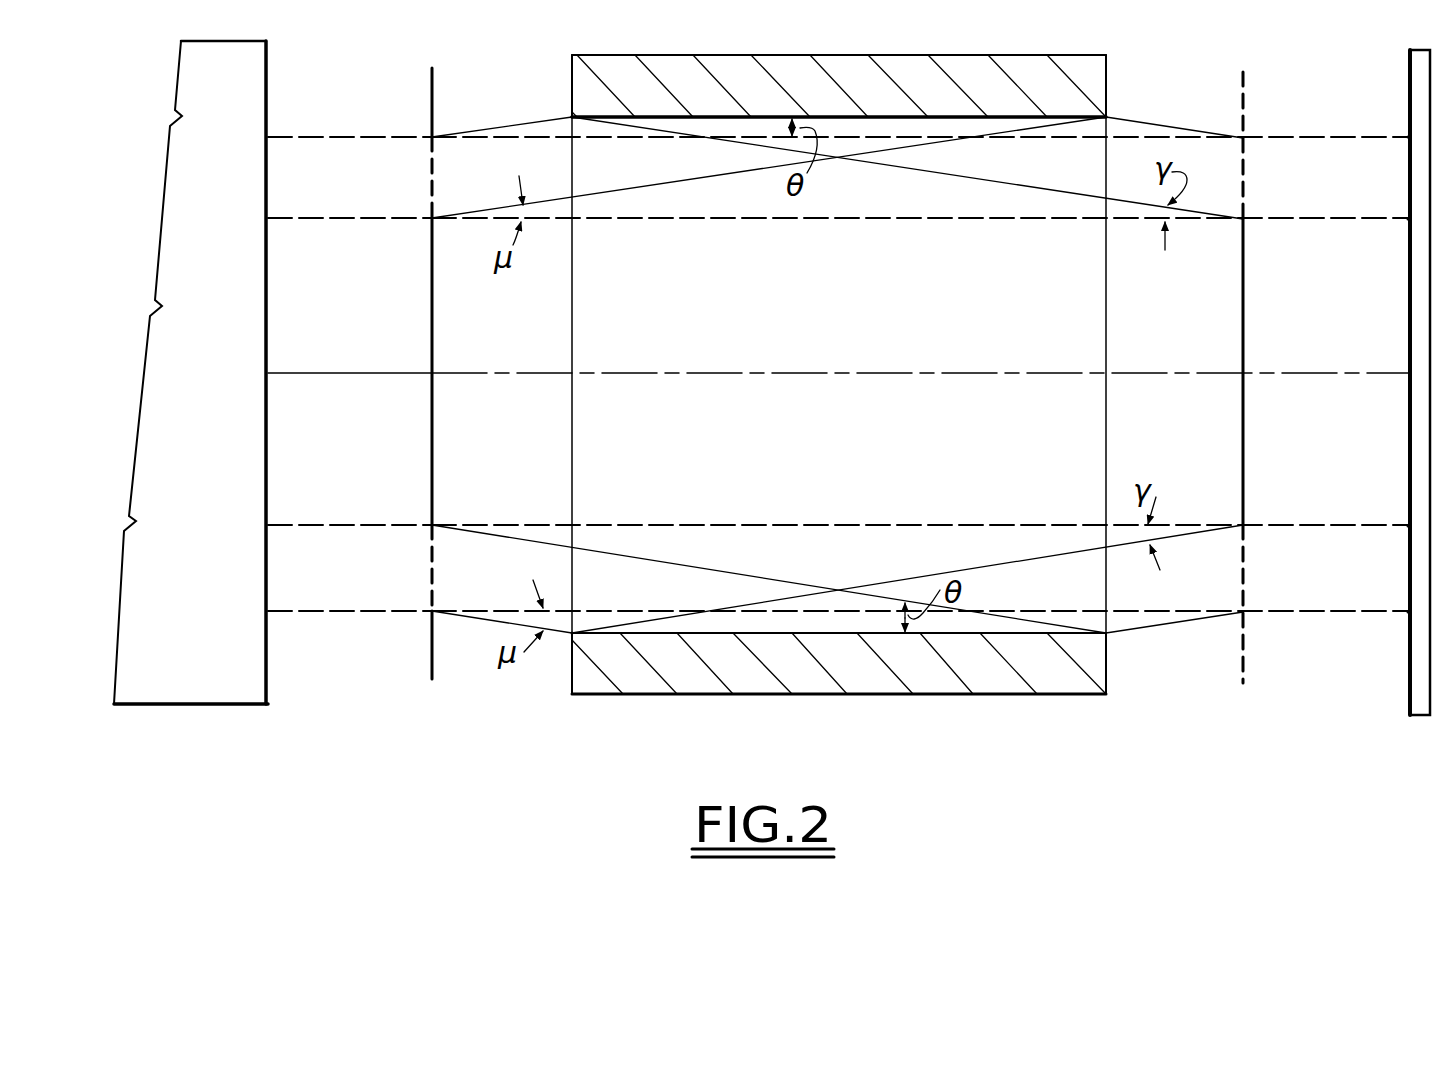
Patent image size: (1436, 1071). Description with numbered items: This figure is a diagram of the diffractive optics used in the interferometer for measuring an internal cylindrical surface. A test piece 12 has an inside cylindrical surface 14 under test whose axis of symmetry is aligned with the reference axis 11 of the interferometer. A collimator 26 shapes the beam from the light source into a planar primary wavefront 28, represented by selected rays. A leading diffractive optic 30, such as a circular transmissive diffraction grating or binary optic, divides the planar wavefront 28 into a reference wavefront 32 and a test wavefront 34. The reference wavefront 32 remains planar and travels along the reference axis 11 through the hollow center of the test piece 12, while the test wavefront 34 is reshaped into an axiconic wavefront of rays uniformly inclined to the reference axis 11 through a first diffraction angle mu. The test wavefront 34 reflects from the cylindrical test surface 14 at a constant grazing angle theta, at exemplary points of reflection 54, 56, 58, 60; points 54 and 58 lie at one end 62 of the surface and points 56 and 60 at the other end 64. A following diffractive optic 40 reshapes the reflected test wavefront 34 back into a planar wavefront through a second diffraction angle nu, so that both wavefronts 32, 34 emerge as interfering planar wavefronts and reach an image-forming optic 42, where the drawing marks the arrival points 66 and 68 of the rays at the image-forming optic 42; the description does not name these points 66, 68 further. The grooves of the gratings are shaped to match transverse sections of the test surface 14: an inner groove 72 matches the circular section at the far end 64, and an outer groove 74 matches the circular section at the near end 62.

The reference axis 11 is at (937, 373).
The test piece 12 is at (1050, 693).
The inside cylindrical surface 14 is at (903, 120).
The collimator 26 is at (266, 87).
The planar primary wavefront 28 is at (268, 217).
The leading diffractive optic 30 is at (430, 292).
The reference wavefront 32 is at (752, 220).
The test wavefront 34 is at (994, 180).
The following diffractive optic 40 is at (1240, 290).
The image-forming optic 42 is at (1408, 72).
The point of reflection 54 is at (582, 118).
The point of reflection 56 is at (1100, 120).
The point of reflection 58 is at (577, 631).
The point of reflection 60 is at (1106, 612).
The one end of the cylindrical test surface 62 is at (572, 452).
The other end of the cylindrical test surface 64 is at (1108, 420).
The inner image point 66 is at (1407, 219).
The outer image point 68 is at (1407, 138).
The inner groove 72 is at (431, 217).
The outer groove 74 is at (432, 137).